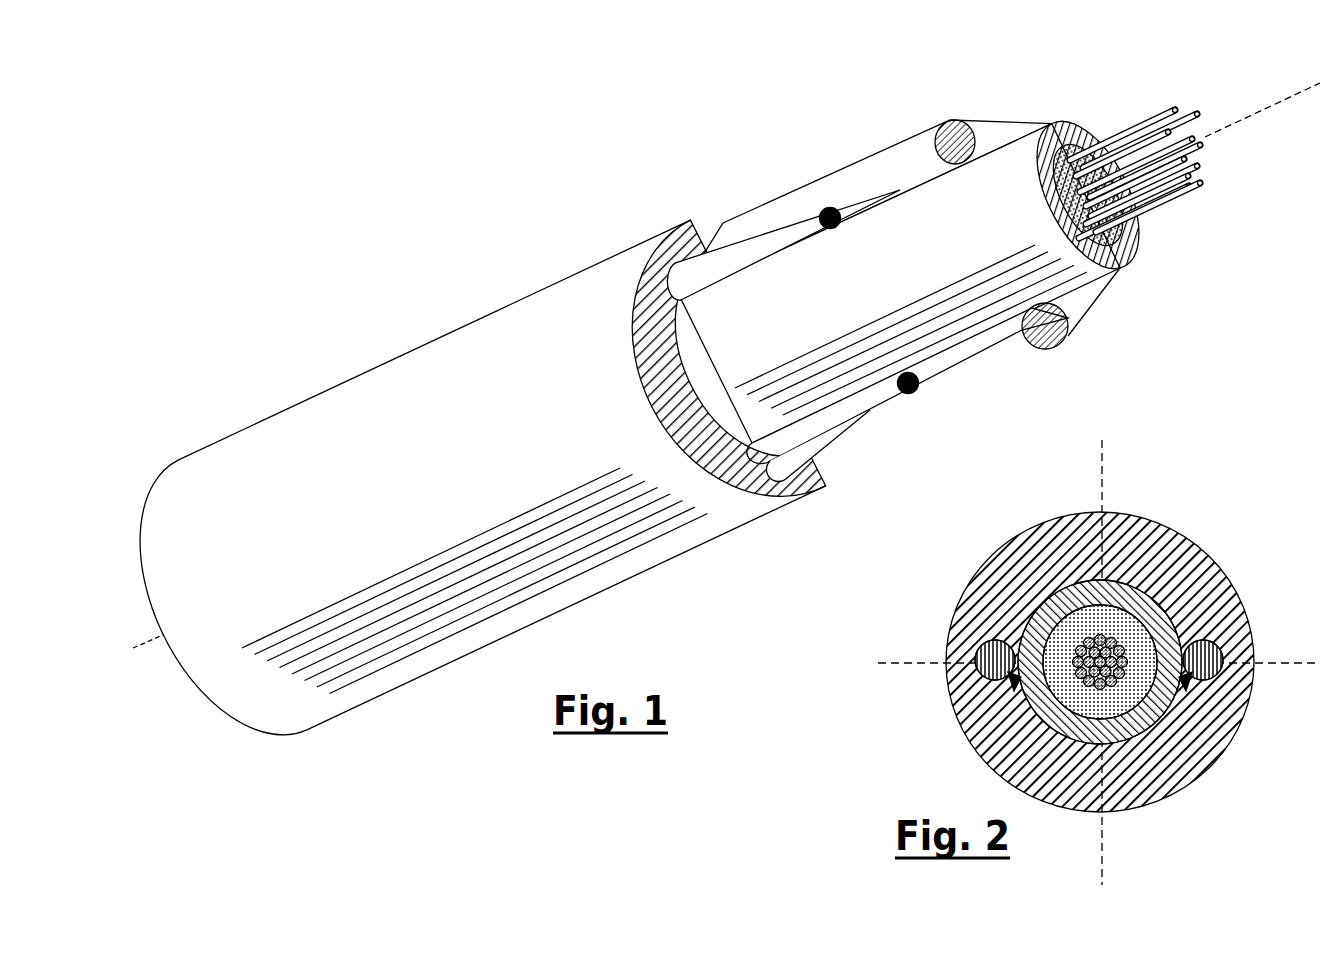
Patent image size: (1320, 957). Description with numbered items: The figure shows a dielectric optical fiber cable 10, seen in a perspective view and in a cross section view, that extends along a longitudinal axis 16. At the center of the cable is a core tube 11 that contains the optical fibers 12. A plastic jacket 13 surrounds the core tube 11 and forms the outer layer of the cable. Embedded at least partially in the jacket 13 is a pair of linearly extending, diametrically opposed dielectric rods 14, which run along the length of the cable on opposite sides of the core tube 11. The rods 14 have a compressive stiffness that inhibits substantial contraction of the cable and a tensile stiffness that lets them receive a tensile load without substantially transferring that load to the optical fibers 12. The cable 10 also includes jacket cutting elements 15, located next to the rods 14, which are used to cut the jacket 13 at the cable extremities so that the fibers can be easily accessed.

In FIG. 1, the dielectric optical fiber cable 10 is at (356, 292).
In FIG. 2, the dielectric optical fiber cable 10 is at (915, 583).
In FIG. 1, the core tube 11 is at (1022, 153).
In FIG. 2, the core tube 11 is at (1036, 530).
In FIG. 1, the optical fibers 12 is at (1137, 212).
In FIG. 2, the optical fibers 12 is at (1177, 546).
In FIG. 1, the plastic jacket 13 is at (540, 285).
In FIG. 2, the plastic jacket 13 is at (1196, 781).
In FIG. 1, the dielectric rods 14 is at (873, 153).
In FIG. 2, the dielectric rods 14 is at (1243, 596).
In FIG. 1, the jacket cutting elements 15 is at (760, 247).
In FIG. 2, the jacket cutting elements 15 is at (1236, 720).
In FIG. 1, the longitudinal axis 16 is at (155, 641).